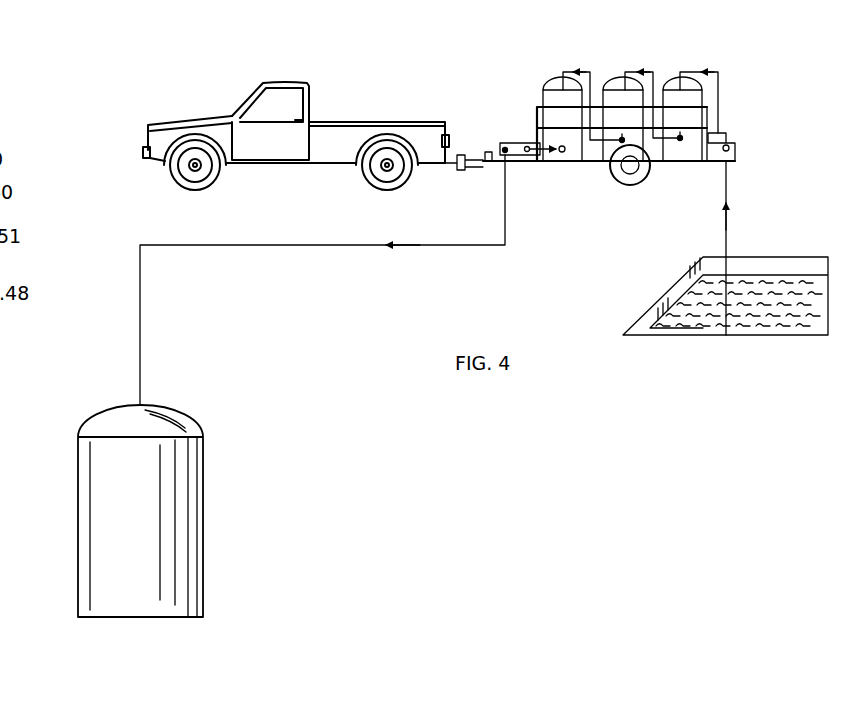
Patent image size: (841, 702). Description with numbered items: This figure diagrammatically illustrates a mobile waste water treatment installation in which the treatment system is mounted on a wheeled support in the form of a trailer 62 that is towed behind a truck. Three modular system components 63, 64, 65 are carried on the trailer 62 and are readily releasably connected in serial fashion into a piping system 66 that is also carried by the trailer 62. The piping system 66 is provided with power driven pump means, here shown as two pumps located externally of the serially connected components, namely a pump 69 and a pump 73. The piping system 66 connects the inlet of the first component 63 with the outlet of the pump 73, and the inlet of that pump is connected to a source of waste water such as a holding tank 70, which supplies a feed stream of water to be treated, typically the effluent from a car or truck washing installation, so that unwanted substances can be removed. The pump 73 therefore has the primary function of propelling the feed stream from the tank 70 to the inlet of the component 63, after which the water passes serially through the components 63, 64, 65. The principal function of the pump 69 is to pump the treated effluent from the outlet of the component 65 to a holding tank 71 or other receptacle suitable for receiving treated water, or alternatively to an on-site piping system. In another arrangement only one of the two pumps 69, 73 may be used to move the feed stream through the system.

The trailer 62 is at (590, 170).
The modular system component 63 is at (697, 97).
The modular system component 64 is at (636, 95).
The modular system component 65 is at (558, 84).
The piping system 66 is at (630, 71).
The pump 69 is at (520, 143).
The holding tank 70 is at (802, 267).
The holding tank 71 is at (203, 514).
The pump 73 is at (732, 141).